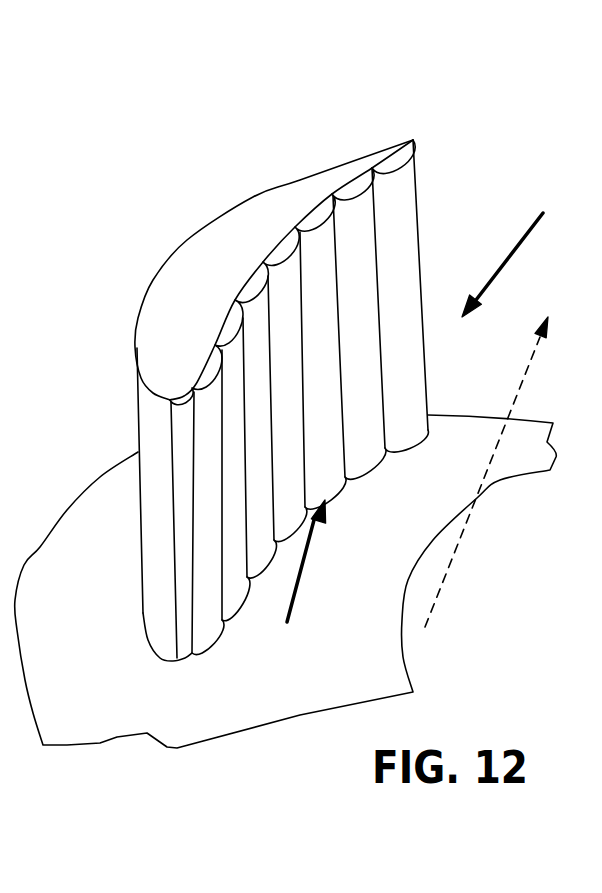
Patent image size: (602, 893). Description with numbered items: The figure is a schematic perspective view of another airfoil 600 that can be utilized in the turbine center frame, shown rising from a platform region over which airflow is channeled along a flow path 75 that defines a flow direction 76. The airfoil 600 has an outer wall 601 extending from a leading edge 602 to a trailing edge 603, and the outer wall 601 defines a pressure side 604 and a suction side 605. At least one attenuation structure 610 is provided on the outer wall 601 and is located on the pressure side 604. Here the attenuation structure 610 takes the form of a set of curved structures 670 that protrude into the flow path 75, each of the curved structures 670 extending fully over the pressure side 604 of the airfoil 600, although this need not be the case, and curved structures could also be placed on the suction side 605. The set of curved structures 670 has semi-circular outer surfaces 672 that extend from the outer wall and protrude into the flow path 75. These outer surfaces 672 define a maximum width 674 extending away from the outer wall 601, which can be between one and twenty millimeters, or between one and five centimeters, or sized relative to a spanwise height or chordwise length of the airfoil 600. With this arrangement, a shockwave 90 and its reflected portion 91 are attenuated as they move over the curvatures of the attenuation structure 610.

The airfoil 600 is at (377, 91).
The outer wall 601 is at (323, 165).
The trailing edge 603 is at (418, 221).
The attenuation structure 610 is at (398, 265).
The set of curved structures 670 is at (282, 312).
The maximum width 674 is at (240, 282).
The semi-circular outer surfaces 672 is at (255, 322).
The leading edge 602 is at (182, 642).
The pressure side 604 is at (186, 617).
The suction side 605 is at (163, 635).
The flow path 75 is at (118, 437).
The flow direction 76 is at (470, 522).
The shockwave 90 is at (300, 593).
The reflected portion 91 is at (516, 249).